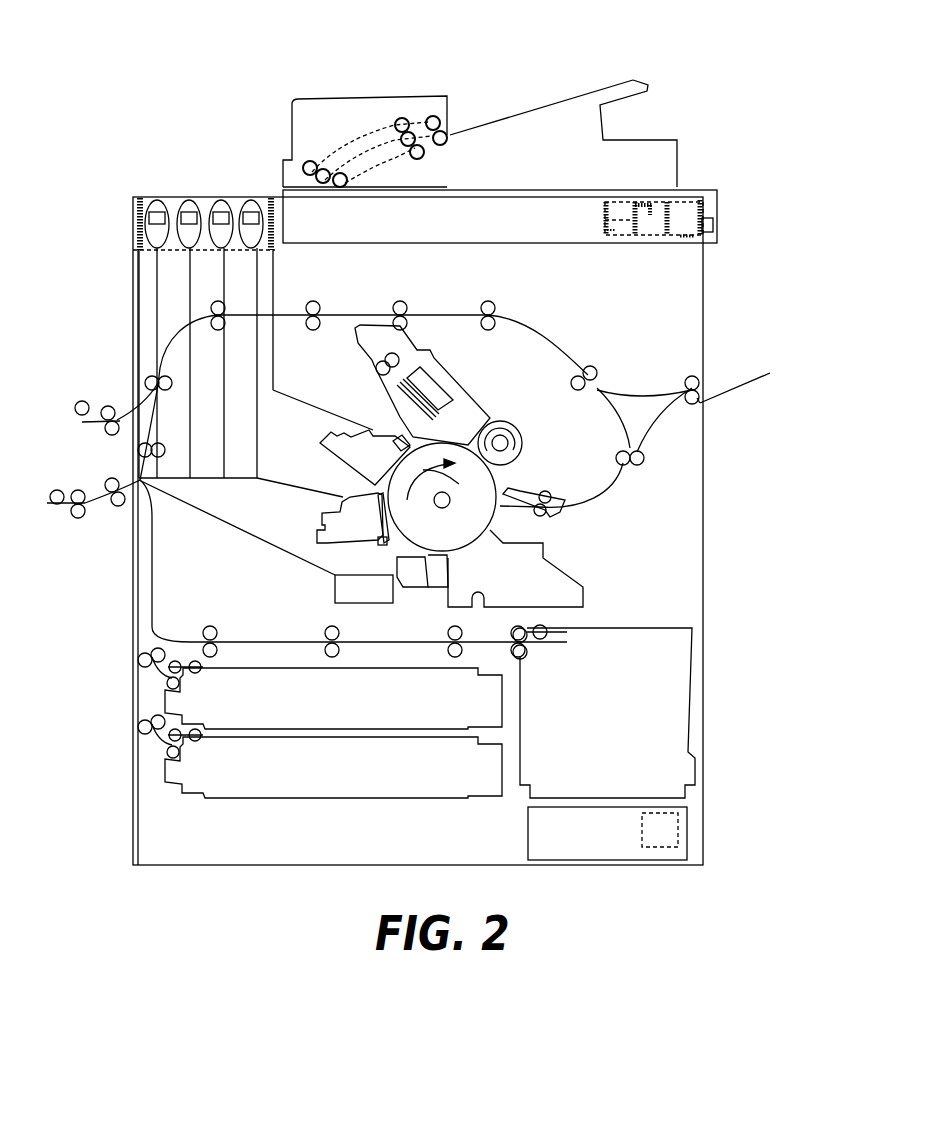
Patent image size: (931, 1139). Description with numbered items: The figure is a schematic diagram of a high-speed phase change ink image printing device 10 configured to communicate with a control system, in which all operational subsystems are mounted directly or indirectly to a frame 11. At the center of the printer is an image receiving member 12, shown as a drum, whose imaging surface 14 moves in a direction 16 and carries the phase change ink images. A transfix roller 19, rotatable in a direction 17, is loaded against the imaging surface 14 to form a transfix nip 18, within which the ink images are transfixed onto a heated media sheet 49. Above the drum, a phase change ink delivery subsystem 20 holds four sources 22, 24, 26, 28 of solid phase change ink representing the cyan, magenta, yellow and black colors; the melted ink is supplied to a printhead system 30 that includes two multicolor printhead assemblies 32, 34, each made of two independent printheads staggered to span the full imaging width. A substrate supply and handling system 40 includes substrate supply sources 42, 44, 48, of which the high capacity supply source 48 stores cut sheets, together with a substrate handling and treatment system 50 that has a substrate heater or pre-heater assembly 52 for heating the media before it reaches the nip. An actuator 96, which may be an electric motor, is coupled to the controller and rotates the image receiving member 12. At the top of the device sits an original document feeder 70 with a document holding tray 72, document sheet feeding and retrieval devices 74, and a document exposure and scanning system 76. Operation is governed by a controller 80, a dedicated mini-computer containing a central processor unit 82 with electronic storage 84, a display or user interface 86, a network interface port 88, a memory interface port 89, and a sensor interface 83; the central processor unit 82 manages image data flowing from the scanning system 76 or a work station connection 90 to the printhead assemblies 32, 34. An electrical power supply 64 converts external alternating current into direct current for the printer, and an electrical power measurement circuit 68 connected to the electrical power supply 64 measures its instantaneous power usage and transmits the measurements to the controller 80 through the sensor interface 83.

The printing device 10 is at (186, 96).
The frame 11 is at (703, 561).
The image receiving member 12 is at (510, 522).
The imaging surface 14 is at (400, 540).
The direction 16 is at (442, 497).
The direction 17 is at (497, 432).
The transfix nip 18 is at (512, 468).
The transfix roller 19 is at (516, 432).
The phase change ink delivery subsystem 20 is at (140, 199).
The source 22 is at (157, 202).
The source 24 is at (189, 202).
The source 26 is at (221, 202).
The source 28 is at (251, 202).
The printhead system 30 is at (318, 473).
The printhead assembly 32 is at (374, 467).
The printhead assembly 34 is at (366, 532).
The substrate supply and handling system 40 is at (394, 812).
The substrate supply source 42 is at (339, 712).
The substrate supply source 44 is at (339, 780).
The substrate supply source 48 is at (613, 729).
The media sheet 49 is at (512, 494).
The substrate handling and treatment system 50 is at (152, 597).
The substrate heater or pre-heater assembly 52 is at (455, 371).
The electrical power supply 64 is at (617, 844).
The electrical power measurement circuit 68 is at (670, 842).
The original document feeder 70 is at (377, 98).
The document holding tray 72 is at (637, 80).
The document sheet feeding and retrieval devices 74 is at (366, 140).
The document exposure and scanning system 76 is at (447, 198).
The controller 80 is at (635, 258).
The central processor unit 82 is at (700, 200).
The sensor interface 83 is at (640, 204).
The electronic storage 84 is at (690, 236).
The display or user interface 86 is at (665, 204).
The network interface port 88 is at (607, 216).
The memory interface port 89 is at (608, 236).
The work station connection 90 is at (714, 225).
The actuator 96 is at (415, 578).